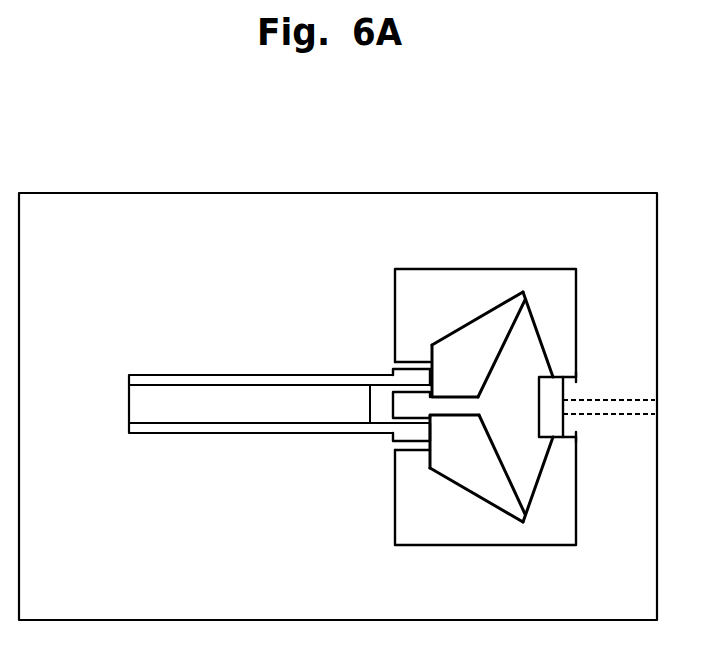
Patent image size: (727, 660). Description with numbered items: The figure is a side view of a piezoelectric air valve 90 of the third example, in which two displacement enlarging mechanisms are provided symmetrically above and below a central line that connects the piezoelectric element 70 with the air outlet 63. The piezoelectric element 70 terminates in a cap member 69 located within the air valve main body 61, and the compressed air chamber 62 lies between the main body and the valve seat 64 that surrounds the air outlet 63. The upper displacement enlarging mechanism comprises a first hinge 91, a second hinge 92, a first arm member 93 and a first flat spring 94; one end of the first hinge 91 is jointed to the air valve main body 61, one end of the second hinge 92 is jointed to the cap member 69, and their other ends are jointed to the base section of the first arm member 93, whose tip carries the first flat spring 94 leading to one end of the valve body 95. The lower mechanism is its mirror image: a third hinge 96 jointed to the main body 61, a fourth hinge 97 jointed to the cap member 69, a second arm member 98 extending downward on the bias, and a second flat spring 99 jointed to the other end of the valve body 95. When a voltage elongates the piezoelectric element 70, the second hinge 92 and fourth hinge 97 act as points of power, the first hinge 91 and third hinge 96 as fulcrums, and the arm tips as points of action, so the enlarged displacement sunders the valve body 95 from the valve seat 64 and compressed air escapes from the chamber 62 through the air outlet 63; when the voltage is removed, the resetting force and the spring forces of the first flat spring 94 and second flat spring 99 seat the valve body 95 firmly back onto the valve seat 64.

The air valve main body 61 is at (253, 208).
The piezoelectric air valve 90 is at (441, 154).
The compressed air chamber 62 is at (421, 290).
The air outlet 63 is at (643, 402).
The valve seat 64 is at (572, 383).
The cap member 69 is at (380, 418).
The piezoelectric element 70 is at (252, 408).
The first hinge 91 is at (410, 363).
The second hinge 92 is at (413, 385).
The first arm member 93 is at (497, 320).
The first flat spring 94 is at (542, 322).
The valve body 95 is at (557, 422).
The third hinge 96 is at (417, 453).
The fourth hinge 97 is at (413, 428).
The second arm member 98 is at (487, 483).
The second flat spring 99 is at (543, 483).